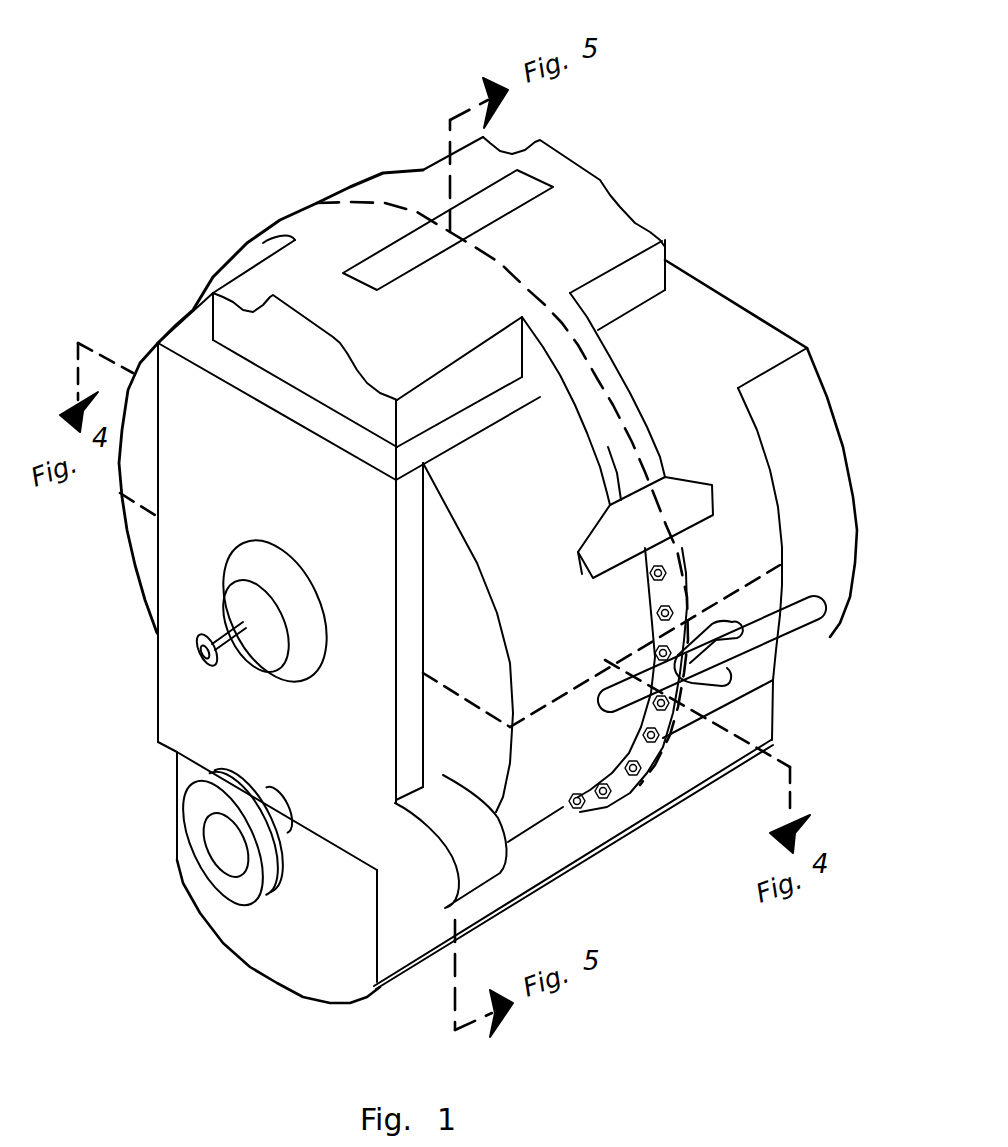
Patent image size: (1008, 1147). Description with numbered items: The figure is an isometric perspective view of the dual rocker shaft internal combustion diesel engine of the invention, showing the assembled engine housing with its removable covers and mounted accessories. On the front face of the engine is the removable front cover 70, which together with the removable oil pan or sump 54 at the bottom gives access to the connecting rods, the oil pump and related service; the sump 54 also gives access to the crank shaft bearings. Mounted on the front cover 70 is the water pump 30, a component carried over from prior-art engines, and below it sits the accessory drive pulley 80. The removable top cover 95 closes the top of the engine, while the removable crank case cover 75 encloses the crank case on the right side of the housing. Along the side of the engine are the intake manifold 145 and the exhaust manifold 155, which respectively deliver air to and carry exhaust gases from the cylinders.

The water pump 30 is at (288, 585).
The removable oil pan or sump 54 is at (243, 963).
The removable front cover 70 is at (238, 483).
The removable crank case cover 75 is at (828, 393).
The accessory drive pulley 80 is at (188, 828).
The removable top cover 95 is at (311, 366).
The intake manifold 145 is at (587, 577).
The exhaust manifold 155 is at (810, 630).